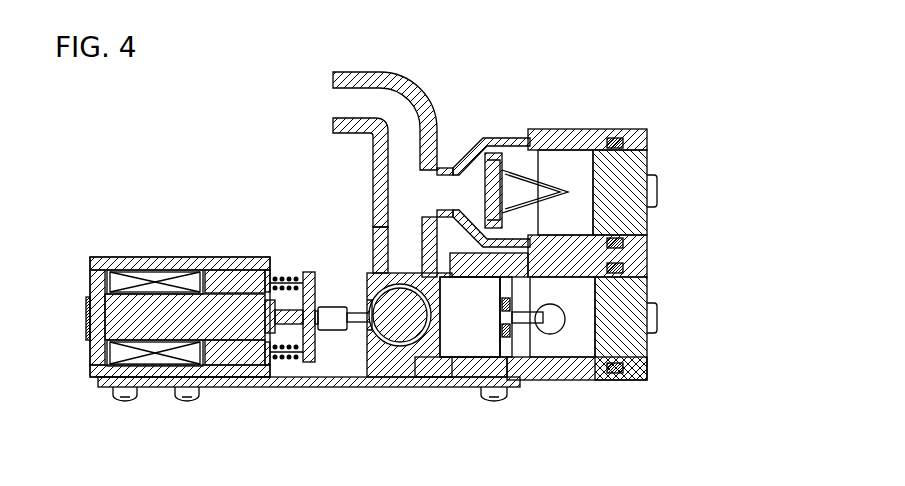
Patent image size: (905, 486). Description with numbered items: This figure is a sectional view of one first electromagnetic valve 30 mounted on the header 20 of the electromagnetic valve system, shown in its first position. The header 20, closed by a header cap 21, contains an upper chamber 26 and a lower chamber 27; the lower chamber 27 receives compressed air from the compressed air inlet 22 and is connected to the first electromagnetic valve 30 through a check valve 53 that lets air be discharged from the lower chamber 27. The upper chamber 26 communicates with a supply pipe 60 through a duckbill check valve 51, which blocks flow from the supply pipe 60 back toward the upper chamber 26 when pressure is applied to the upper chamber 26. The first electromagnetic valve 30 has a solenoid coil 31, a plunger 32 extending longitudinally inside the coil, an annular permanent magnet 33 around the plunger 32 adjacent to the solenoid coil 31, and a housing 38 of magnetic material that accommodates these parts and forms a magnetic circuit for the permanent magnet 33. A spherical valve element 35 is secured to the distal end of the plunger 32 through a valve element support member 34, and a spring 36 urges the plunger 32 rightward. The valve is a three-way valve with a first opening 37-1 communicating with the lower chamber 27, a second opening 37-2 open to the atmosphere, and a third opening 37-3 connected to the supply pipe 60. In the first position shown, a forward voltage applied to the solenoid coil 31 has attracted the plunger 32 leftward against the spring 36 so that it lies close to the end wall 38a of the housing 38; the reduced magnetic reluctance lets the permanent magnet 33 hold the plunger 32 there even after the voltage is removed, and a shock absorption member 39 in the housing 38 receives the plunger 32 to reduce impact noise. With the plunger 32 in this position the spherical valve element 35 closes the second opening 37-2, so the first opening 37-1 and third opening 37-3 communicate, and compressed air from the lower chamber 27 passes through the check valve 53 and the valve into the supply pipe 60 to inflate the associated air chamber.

The header 20 is at (600, 130).
The header cap 21 is at (636, 290).
The compressed air inlet 22 is at (552, 320).
The upper chamber 26 is at (572, 170).
The lower chamber 27 is at (578, 337).
The first electromagnetic valve 30 is at (257, 252).
The solenoid coil 31 is at (163, 273).
The plunger 32 is at (148, 315).
The permanent magnet 33 is at (228, 272).
The valve element support member 34 is at (333, 322).
The spherical valve element 35 is at (404, 327).
The spring 36 is at (300, 352).
The first opening 37-1 is at (442, 332).
The second opening 37-2 is at (376, 315).
The third opening 37-3 is at (398, 250).
The housing 38 is at (177, 258).
The end wall 38a is at (86, 322).
The shock absorption member 39 is at (88, 295).
The duckbill check valve 51 is at (503, 165).
The check valve 53 is at (517, 323).
The supply pipe 60 is at (355, 72).